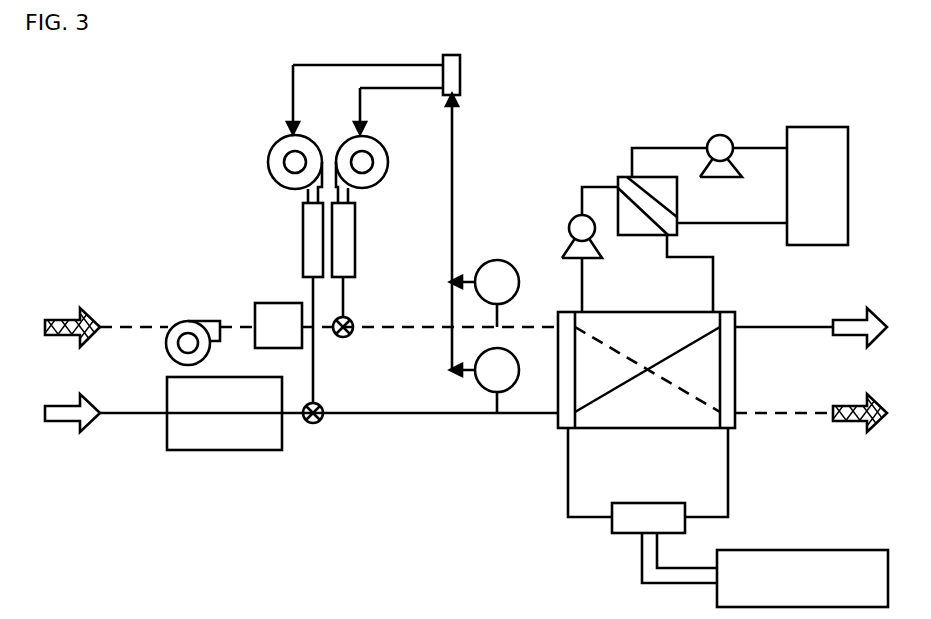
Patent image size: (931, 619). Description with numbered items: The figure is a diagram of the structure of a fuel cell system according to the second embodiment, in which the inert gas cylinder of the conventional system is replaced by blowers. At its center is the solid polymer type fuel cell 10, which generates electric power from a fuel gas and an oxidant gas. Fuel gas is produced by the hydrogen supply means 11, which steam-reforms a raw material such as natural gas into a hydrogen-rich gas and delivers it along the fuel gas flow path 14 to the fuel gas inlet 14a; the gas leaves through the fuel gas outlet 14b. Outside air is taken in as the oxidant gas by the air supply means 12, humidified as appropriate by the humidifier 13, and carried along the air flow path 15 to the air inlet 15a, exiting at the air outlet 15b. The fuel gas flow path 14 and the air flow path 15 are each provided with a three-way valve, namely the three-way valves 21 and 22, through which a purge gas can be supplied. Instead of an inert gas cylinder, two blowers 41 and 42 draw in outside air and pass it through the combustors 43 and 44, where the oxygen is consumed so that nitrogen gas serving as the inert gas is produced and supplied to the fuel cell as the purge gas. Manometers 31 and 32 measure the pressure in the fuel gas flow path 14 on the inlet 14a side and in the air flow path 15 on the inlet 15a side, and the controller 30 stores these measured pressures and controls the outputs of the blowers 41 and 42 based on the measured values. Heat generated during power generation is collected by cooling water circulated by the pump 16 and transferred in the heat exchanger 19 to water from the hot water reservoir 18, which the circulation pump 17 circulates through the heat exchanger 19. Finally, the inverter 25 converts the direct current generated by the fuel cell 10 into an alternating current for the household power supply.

The fuel cell 10 is at (655, 345).
The hydrogen supply means 11 is at (215, 450).
The air supply means 12 is at (188, 322).
The humidifier 13 is at (270, 303).
The fuel gas flow path 14 is at (128, 418).
The fuel gas inlet 14a is at (560, 428).
The fuel gas outlet 14b is at (736, 327).
The air flow path 15 is at (120, 326).
The air inlet 15a is at (557, 327).
The air outlet 15b is at (736, 414).
The pump 16 is at (588, 232).
The circulation pump 17 is at (720, 135).
The hot water reservoir 18 is at (845, 130).
The heat exchanger 19 is at (622, 180).
The three-way valve 21 is at (321, 406).
The three-way valve 22 is at (350, 320).
The inverter 25 is at (613, 535).
The controller 30 is at (460, 70).
The manometer 31 is at (481, 386).
The manometer 32 is at (497, 260).
The blower 41 is at (280, 150).
The blower 42 is at (368, 150).
The combustor 43 is at (302, 232).
The combustor 44 is at (345, 232).